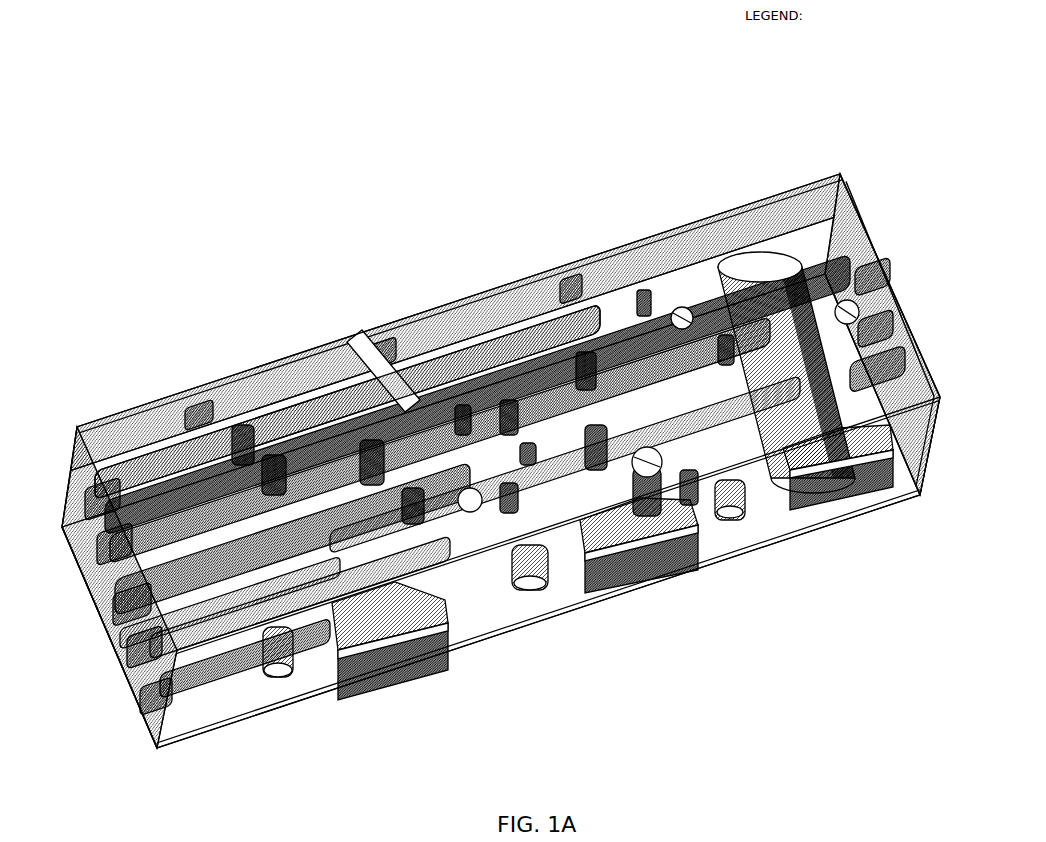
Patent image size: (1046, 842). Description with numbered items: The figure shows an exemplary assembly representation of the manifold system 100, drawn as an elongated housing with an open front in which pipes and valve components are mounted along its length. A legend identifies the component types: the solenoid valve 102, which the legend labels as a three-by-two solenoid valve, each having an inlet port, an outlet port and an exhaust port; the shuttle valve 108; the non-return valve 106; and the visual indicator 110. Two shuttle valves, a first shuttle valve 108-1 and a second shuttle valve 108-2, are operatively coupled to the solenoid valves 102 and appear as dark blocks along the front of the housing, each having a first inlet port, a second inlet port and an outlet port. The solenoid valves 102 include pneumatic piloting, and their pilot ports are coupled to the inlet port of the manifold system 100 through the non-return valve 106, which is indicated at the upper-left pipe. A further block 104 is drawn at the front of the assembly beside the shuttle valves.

The manifold system 100 is at (126, 182).
The solenoid valve 102 is at (788, 102).
The shuttle valve 104 is at (415, 688).
The non-return valve 106 is at (125, 433).
The shuttle valve 108 is at (788, 62).
The first shuttle valve 108-1 is at (640, 598).
The second shuttle valve 108-2 is at (823, 513).
The visual indicator 110 is at (788, 141).